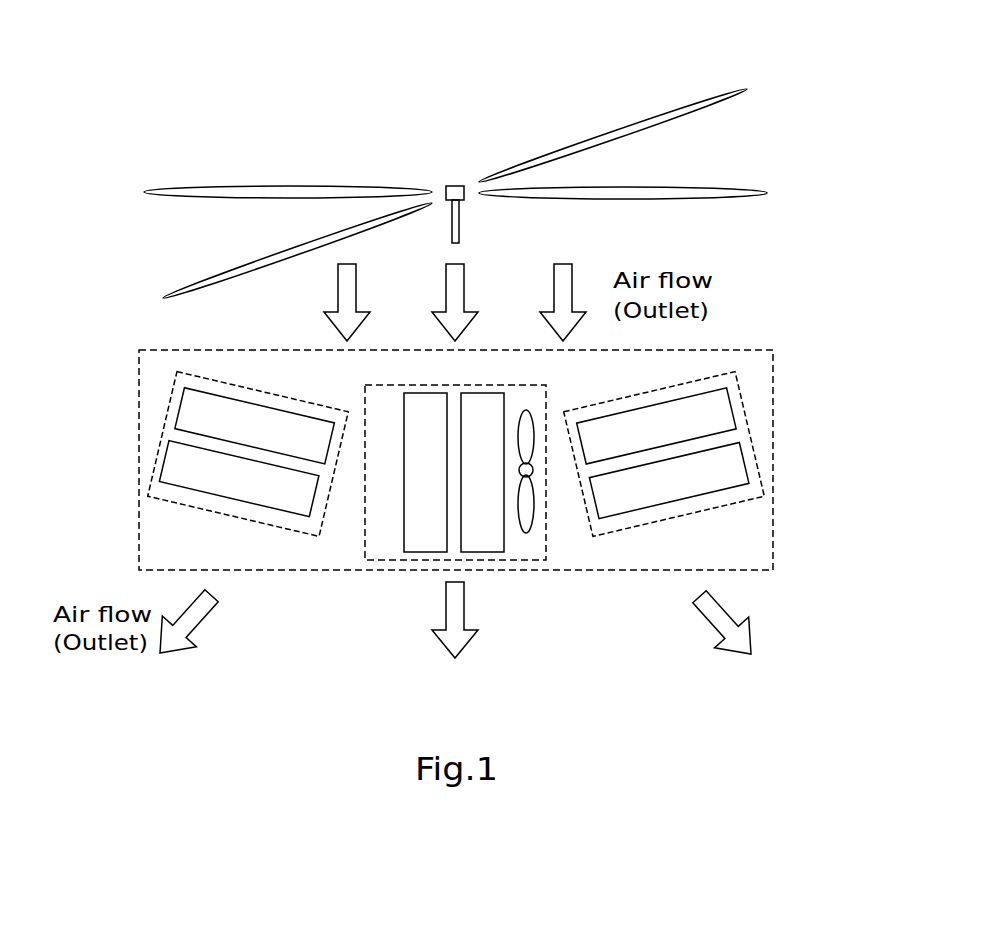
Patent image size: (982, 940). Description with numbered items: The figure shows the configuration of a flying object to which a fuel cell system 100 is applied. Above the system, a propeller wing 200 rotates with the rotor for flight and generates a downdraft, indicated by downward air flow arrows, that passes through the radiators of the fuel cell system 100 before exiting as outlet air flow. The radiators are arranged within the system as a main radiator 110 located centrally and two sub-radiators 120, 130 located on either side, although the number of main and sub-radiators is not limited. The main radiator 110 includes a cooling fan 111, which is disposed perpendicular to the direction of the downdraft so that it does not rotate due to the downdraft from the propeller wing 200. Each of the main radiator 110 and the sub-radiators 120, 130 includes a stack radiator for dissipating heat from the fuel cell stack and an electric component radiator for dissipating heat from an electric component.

The fuel cell system 100 is at (773, 378).
The main radiator 110 is at (510, 560).
The cooling fan 111 is at (533, 513).
The sub-radiator 120 is at (263, 390).
The sub-radiator 130 is at (705, 378).
The propeller wing 200 is at (713, 188).